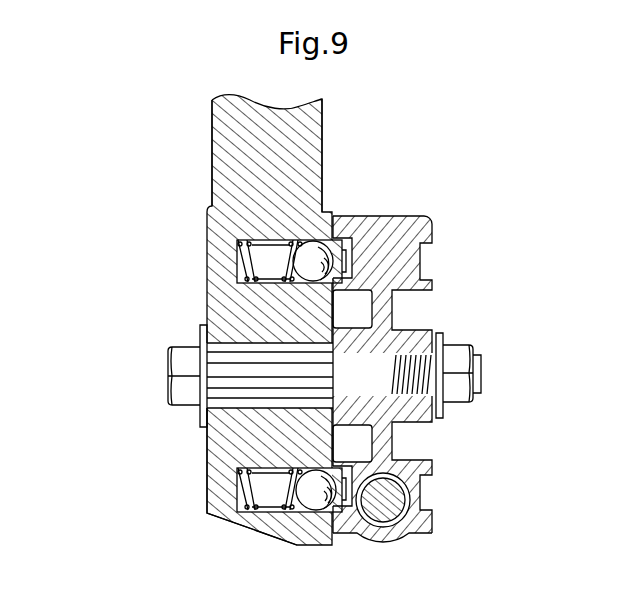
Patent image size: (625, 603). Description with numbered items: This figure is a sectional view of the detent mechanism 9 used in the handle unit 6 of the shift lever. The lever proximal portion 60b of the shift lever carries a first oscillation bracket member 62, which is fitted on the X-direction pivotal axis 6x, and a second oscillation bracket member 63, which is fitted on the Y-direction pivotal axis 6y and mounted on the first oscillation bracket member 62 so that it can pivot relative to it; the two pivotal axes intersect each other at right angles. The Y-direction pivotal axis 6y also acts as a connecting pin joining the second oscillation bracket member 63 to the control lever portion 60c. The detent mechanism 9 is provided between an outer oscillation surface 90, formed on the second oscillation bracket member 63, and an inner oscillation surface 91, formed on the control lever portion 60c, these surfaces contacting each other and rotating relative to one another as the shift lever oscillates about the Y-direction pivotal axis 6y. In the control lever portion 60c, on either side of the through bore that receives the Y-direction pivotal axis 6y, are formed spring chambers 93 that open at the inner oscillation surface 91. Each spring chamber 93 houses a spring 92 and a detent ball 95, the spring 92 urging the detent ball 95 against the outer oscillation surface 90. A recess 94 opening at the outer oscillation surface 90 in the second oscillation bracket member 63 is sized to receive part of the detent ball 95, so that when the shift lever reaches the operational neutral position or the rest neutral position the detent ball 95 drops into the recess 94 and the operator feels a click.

The handle unit 6 is at (322, 140).
The lever proximal portion 60b is at (222, 144).
The control lever portion 60c is at (216, 447).
The detent mechanism 9 is at (229, 237).
The spring 92 is at (238, 250).
The spring chamber 93 is at (265, 263).
The recess 94 is at (330, 280).
The detent ball 95 is at (313, 248).
The second oscillation bracket member 63 is at (417, 333).
The first oscillation bracket member 62 is at (420, 531).
The X-direction pivotal axis 6x is at (398, 496).
The outer oscillation surface 90 is at (293, 431).
The inner oscillation surface 91 is at (337, 318).
The Y-direction pivotal axis 6y is at (481, 373).